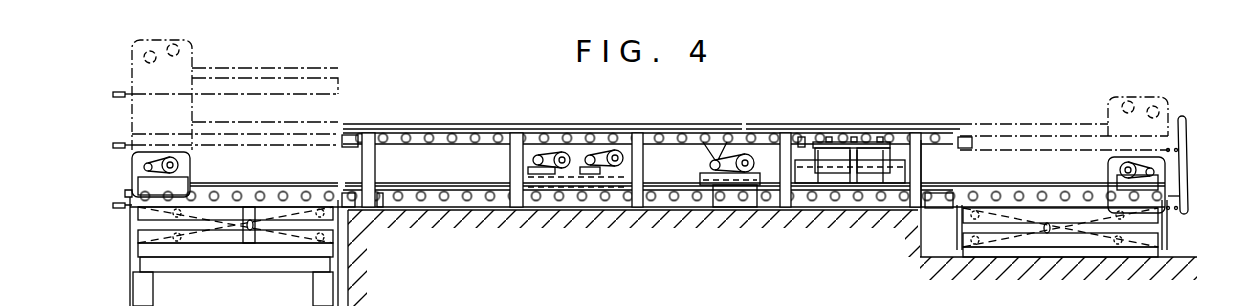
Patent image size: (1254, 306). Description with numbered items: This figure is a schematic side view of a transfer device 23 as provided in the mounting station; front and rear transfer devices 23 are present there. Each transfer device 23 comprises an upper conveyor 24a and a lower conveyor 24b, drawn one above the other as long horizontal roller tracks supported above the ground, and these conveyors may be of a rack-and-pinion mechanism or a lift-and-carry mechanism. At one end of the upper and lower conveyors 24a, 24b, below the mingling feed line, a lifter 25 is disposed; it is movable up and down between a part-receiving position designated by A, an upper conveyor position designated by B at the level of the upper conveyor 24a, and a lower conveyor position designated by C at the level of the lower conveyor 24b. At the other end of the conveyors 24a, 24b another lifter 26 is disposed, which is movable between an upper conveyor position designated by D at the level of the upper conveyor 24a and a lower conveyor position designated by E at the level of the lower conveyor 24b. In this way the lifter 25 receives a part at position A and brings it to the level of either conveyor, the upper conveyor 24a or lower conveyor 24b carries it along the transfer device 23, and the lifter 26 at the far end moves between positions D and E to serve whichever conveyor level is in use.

The transfer device 23 is at (702, 127).
The upper conveyor 24a is at (487, 137).
The lower conveyor 24b is at (475, 200).
The lifter 25 is at (137, 222).
The lifter 26 is at (1155, 228).
The part-receiving position A is at (106, 90).
The upper conveyor position B is at (107, 139).
The lower conveyor position C is at (108, 185).
The upper conveyor position D is at (1189, 138).
The lower conveyor position E is at (1191, 189).